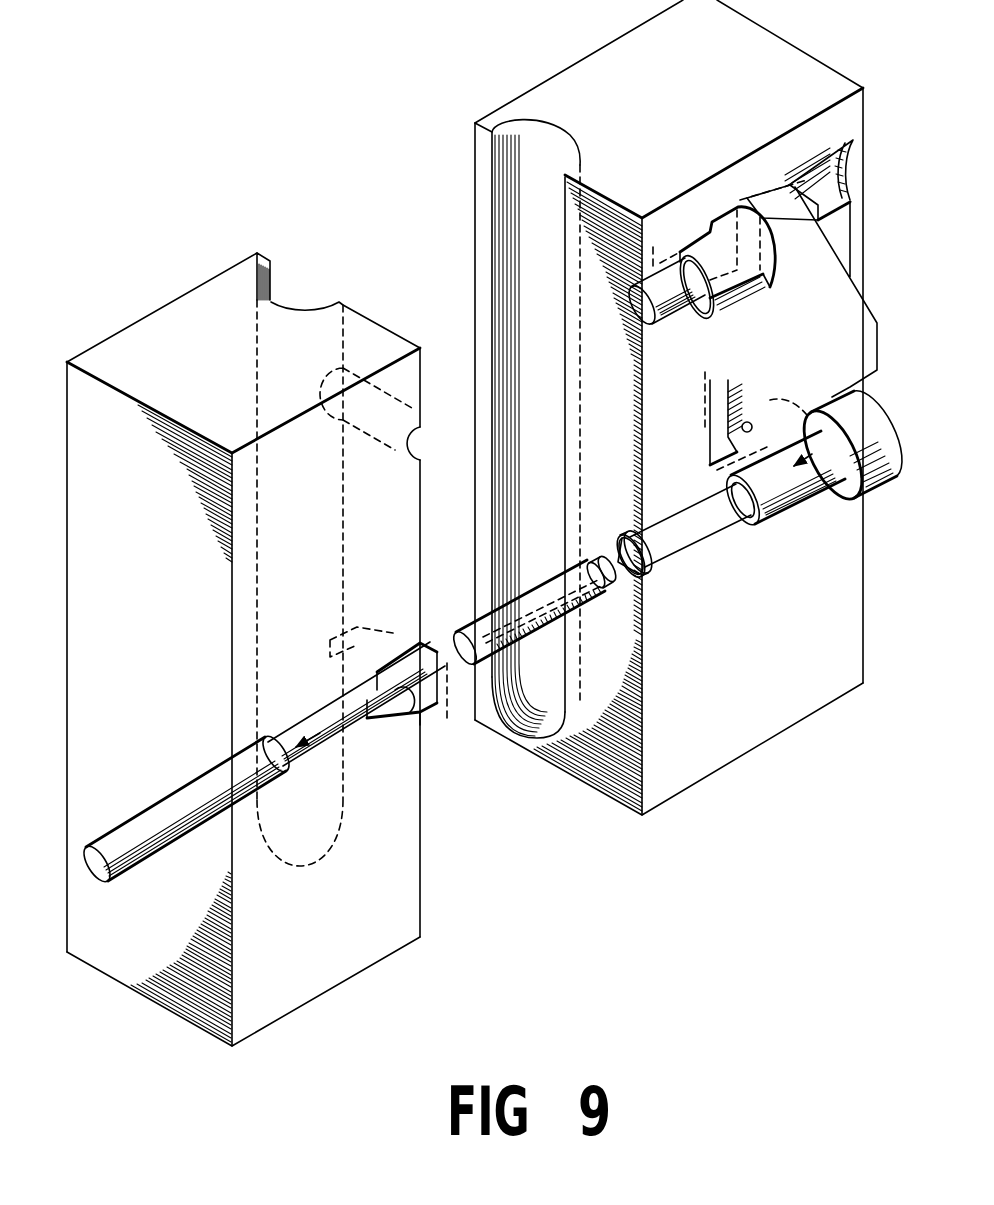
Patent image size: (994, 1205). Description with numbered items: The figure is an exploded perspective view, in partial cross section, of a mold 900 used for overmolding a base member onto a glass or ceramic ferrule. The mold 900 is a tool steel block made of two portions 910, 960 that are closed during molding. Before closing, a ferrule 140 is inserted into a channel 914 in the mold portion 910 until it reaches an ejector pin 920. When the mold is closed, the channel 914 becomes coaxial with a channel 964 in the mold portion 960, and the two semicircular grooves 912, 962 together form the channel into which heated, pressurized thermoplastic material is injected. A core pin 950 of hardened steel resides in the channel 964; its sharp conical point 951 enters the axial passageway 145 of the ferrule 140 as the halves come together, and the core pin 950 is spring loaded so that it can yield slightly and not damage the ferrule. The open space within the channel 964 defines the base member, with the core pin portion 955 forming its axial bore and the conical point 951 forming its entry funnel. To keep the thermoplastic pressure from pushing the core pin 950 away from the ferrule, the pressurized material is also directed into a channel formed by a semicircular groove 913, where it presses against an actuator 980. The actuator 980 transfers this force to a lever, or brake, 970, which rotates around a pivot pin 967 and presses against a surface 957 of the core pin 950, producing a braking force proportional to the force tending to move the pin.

The mold 900 is at (313, 126).
The mold portion 910 is at (163, 296).
The semicircular groove 912 is at (268, 280).
The semicircular groove 913 is at (405, 433).
The channel 914 is at (332, 738).
The ejector pin 920 is at (177, 787).
The ferrule 140 is at (530, 592).
The axial passageway 145 is at (569, 602).
The mold portion 960 is at (585, 46).
The semicircular groove 962 is at (482, 180).
The channel 964 is at (624, 527).
The pivot pin 967 is at (748, 425).
The lever (brake) 970 is at (827, 235).
The actuator 980 is at (722, 214).
The core pin 950 is at (749, 476).
The conical point 951 is at (640, 583).
The core pin portion 955 is at (707, 527).
The surface 957 is at (858, 497).